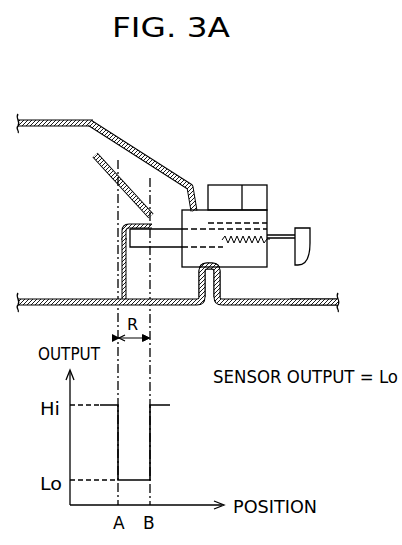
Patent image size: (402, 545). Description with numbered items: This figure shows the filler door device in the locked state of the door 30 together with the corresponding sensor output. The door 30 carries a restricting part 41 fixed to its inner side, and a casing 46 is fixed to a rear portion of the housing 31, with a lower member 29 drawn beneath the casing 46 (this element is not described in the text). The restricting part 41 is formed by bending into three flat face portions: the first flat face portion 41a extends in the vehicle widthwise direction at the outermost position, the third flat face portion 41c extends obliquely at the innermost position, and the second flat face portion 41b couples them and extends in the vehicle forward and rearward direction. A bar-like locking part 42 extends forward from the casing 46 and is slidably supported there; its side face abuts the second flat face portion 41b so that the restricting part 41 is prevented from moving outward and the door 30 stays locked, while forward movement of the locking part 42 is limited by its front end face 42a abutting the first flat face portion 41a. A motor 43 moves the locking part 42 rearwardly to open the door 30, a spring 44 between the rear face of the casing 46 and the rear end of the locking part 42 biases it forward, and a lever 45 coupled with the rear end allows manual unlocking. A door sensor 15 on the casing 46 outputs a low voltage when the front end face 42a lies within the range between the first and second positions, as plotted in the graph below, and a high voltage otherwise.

The door sensor 15 is at (256, 185).
The frame 29 is at (320, 306).
The door 30 is at (48, 298).
The housing 31 is at (68, 119).
The restricting part 41 is at (128, 171).
The first flat face portion 41a is at (122, 247).
The second flat face portion 41b is at (126, 223).
The third flat face portion 41c is at (109, 173).
The locking part 42 is at (161, 243).
The front end face 42a is at (123, 236).
The motor 43 is at (221, 185).
The spring 44 is at (240, 270).
The lever 45 is at (311, 238).
The casing 46 is at (268, 218).